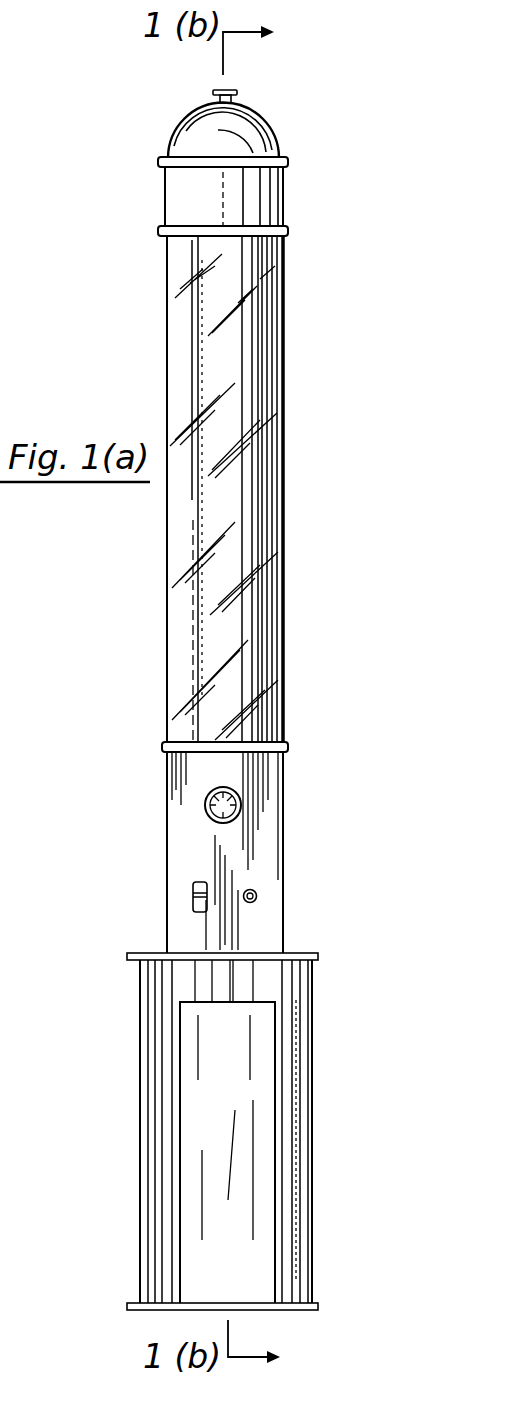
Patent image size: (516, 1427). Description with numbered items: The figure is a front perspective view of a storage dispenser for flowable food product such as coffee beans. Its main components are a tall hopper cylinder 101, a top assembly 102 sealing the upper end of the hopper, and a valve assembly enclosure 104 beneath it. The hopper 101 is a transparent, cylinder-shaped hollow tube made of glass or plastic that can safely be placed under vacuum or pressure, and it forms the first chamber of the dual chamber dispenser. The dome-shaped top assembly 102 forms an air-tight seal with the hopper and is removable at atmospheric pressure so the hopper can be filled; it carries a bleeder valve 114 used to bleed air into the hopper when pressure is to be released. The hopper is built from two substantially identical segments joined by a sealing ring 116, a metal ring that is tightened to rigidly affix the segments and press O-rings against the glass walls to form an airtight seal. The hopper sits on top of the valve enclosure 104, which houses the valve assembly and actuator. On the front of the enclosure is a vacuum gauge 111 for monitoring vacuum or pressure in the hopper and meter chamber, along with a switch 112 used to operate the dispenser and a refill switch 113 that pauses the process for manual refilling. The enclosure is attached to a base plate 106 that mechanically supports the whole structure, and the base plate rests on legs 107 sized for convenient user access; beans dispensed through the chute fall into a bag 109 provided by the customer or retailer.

The hopper cylinder 101 is at (275, 413).
The top assembly 102 is at (297, 125).
The valve assembly enclosure 104 is at (312, 1030).
The base plate 106 is at (320, 958).
The legs 107 is at (312, 1064).
The bag 109 is at (287, 1182).
The vacuum gauge 111 is at (238, 808).
The switch 112 is at (258, 898).
The refill switch 113 is at (193, 903).
The bleeder valve 114 is at (234, 100).
The sealing ring 116 is at (290, 233).